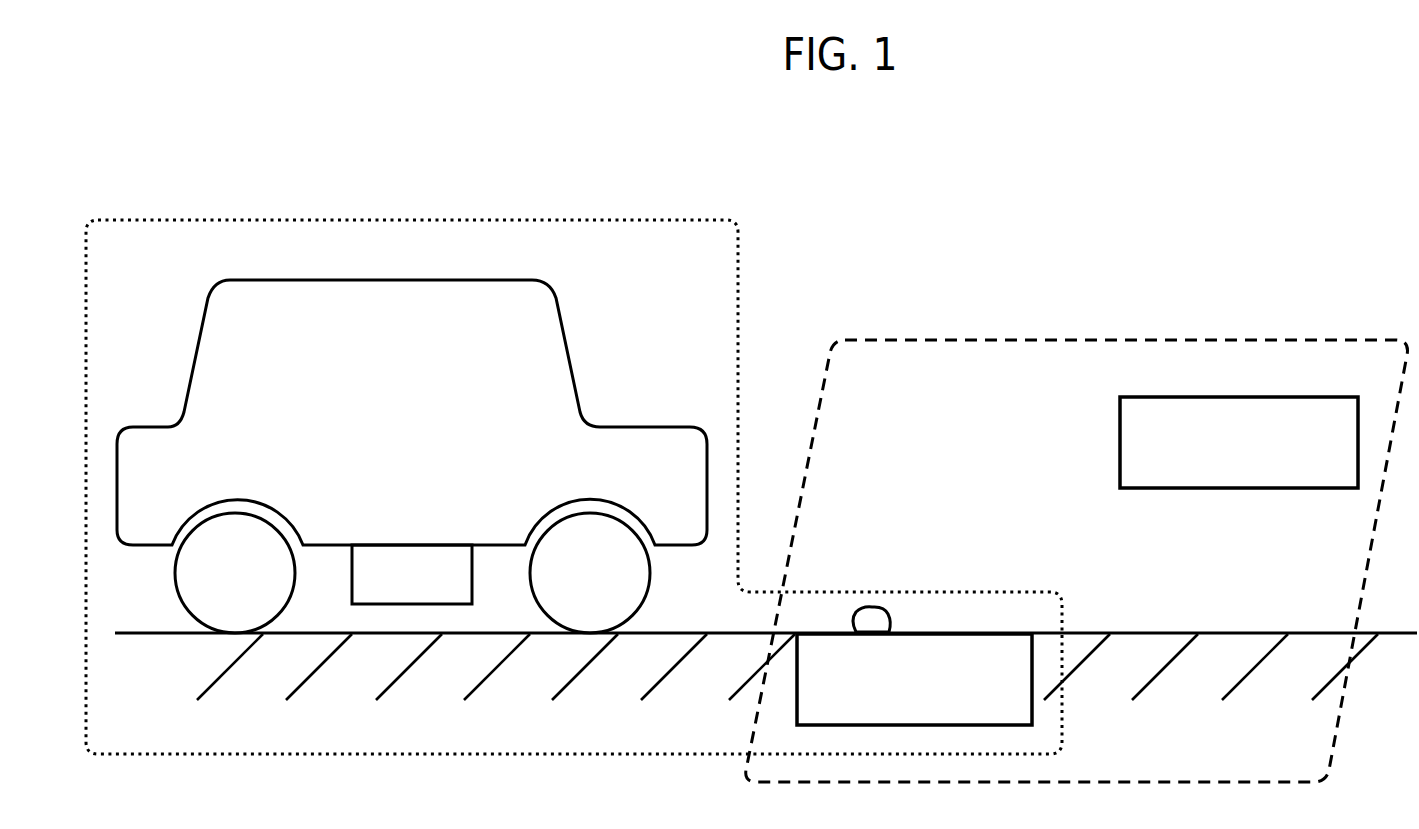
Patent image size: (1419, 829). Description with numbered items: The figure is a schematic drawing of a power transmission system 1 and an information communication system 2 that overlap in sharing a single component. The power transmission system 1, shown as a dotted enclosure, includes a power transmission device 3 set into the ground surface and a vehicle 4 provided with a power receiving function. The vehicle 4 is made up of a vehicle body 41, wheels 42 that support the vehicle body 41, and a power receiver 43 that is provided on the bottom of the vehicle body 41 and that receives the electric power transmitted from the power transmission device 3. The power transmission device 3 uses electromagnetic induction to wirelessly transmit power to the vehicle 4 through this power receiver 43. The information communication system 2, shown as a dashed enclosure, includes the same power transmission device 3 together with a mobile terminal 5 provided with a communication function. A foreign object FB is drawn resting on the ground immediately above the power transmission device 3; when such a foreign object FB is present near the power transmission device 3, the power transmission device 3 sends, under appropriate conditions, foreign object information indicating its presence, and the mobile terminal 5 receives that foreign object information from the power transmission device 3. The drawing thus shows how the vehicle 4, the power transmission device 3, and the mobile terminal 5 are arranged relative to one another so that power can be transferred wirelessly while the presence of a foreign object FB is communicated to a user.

The power transmission system 1 is at (670, 220).
The information communication system 2 is at (1297, 340).
The power transmission device 3 is at (1014, 719).
The vehicle 4 is at (412, 456).
The vehicle body 41 is at (403, 472).
The wheels 42 is at (223, 585).
The power receiver 43 is at (400, 585).
The mobile terminal 5 is at (1232, 474).
The foreign object FB is at (885, 608).